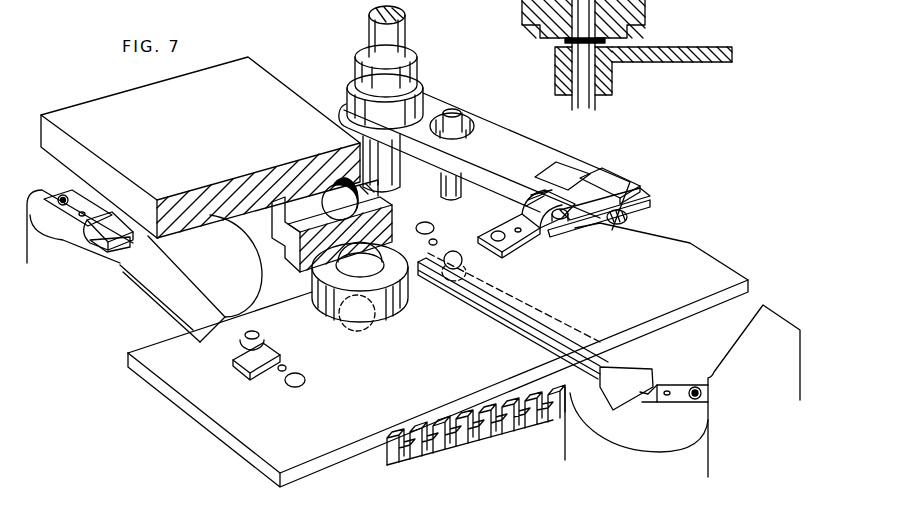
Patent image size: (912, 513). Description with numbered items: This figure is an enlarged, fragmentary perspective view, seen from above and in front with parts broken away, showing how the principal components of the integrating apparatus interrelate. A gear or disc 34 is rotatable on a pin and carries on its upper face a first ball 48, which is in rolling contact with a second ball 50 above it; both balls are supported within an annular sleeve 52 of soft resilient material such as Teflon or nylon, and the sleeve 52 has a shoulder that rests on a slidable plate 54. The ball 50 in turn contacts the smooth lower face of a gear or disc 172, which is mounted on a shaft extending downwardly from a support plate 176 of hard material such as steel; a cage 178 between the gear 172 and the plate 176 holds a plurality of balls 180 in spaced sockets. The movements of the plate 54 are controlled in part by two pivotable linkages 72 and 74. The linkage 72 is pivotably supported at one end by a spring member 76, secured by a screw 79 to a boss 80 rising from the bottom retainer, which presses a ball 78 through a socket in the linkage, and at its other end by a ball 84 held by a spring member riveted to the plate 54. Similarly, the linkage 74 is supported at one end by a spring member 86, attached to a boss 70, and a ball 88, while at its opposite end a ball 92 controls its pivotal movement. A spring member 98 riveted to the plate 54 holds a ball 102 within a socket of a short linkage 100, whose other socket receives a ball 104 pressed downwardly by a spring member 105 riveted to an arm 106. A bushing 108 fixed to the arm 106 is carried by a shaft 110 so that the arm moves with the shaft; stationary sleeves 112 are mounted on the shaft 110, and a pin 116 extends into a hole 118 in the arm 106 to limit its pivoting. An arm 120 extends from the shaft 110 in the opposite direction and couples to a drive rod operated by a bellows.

The gear or disc 34 is at (541, 449).
The first ball 48 is at (350, 327).
The ball 50 is at (320, 278).
The annular sleeve 52 is at (323, 310).
The plate 54 is at (190, 397).
The boss 70 is at (667, 447).
The pivotable linkage 72 is at (173, 298).
The pivotable linkage 74 is at (607, 412).
The spring member 76 is at (97, 245).
The ball 78 is at (118, 258).
The screw 79 is at (62, 198).
The boss 80 is at (63, 232).
The ball 84 is at (243, 351).
The spring member 86 is at (712, 398).
The ball 88 is at (628, 418).
The ball 92 is at (464, 263).
The spring member 98 is at (503, 225).
The linkage 100 is at (645, 203).
The ball 102 is at (560, 221).
The ball 104 is at (643, 196).
The spring member 105 is at (608, 172).
The arm 106 is at (531, 147).
The bushing 108 is at (421, 68).
The shaft 110 is at (404, 27).
The sleeves 112 is at (545, 36).
The pin 116 is at (454, 112).
The hole 118 is at (474, 126).
The arm 120 is at (690, 63).
The gear or disc 172 is at (277, 258).
The support plate 176 is at (257, 63).
The cage 178 is at (325, 200).
The balls 180 is at (333, 186).